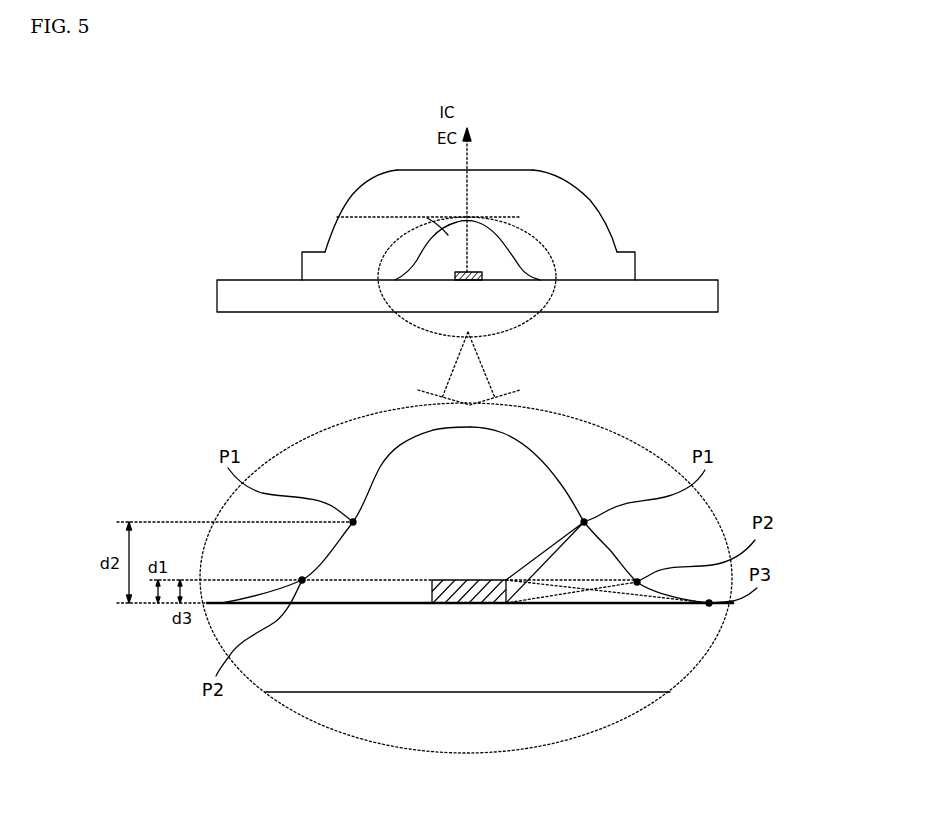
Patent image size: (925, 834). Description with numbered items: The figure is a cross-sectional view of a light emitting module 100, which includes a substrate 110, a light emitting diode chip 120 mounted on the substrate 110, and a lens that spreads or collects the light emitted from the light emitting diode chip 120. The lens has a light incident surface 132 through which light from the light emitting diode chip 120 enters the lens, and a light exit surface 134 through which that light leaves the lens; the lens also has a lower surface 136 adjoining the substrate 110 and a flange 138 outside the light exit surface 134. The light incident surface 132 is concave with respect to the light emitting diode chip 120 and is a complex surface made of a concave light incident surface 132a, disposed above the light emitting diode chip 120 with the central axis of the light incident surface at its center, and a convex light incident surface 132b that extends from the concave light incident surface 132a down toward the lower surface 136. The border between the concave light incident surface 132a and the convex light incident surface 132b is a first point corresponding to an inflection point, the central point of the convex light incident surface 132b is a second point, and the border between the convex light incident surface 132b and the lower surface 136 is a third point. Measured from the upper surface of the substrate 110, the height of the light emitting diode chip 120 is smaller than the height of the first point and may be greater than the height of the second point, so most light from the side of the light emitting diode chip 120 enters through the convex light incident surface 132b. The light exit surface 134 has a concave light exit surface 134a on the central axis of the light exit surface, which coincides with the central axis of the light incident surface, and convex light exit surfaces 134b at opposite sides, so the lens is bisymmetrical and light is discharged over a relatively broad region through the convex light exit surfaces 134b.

The light emitting module 100 is at (391, 130).
The substrate 110 is at (720, 292).
The light emitting diode chip 120 is at (455, 280).
The light incident surface 132 is at (337, 216).
The concave light incident surface 132a is at (540, 454).
The convex light incident surface 132b is at (604, 548).
The light exit surface 134 is at (522, 107).
The concave light exit surface 134a is at (493, 170).
The convex light exit surfaces 134b is at (394, 170).
The lower surface 136 is at (309, 283).
The flange 138 is at (617, 253).